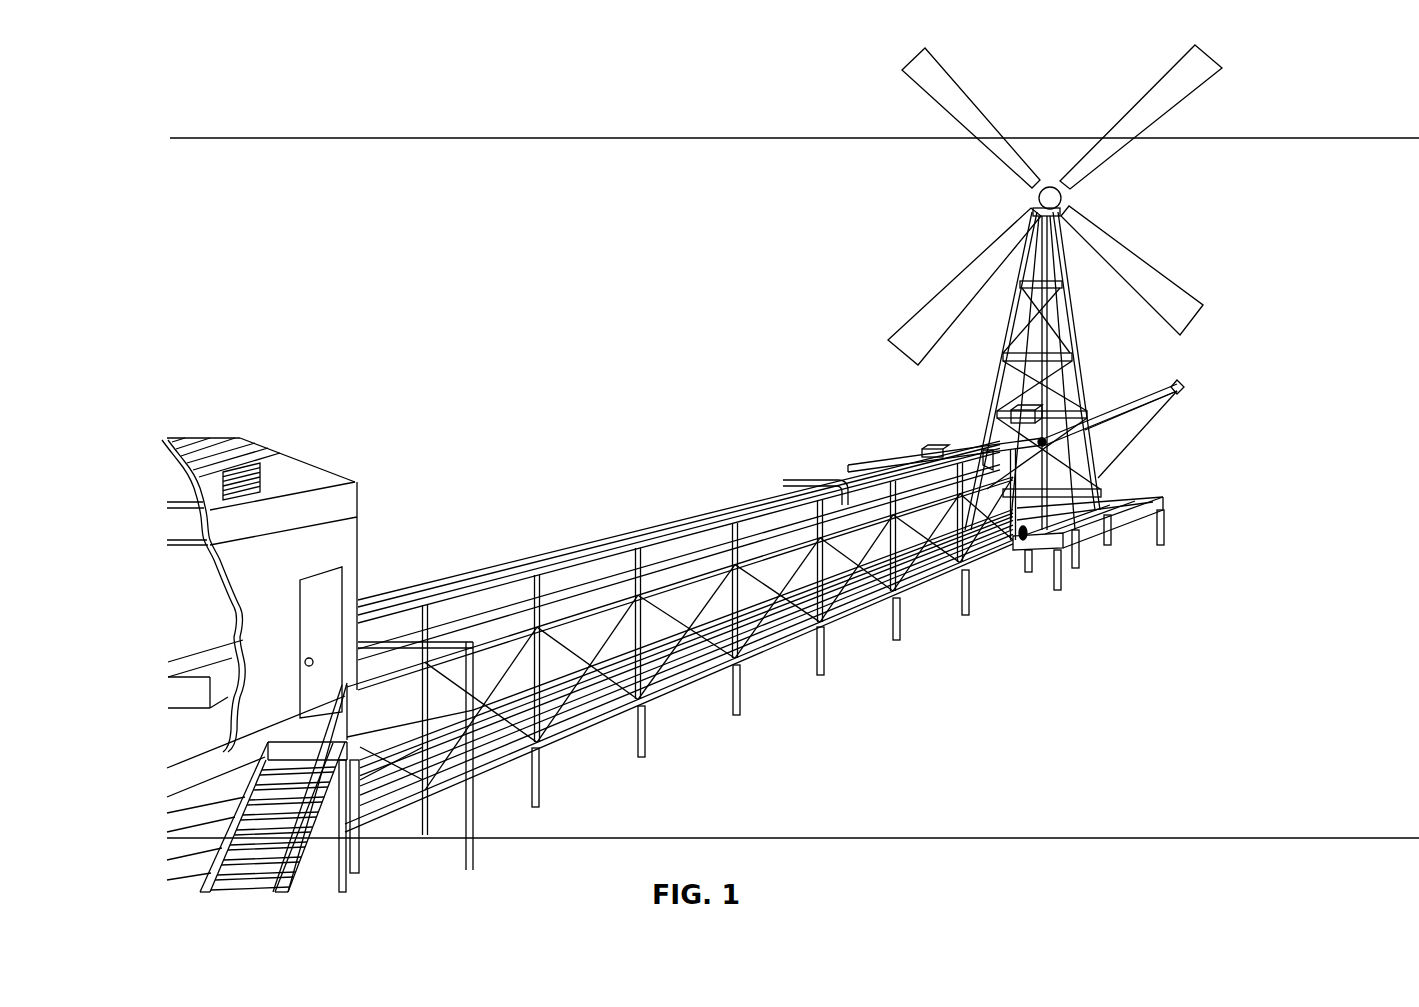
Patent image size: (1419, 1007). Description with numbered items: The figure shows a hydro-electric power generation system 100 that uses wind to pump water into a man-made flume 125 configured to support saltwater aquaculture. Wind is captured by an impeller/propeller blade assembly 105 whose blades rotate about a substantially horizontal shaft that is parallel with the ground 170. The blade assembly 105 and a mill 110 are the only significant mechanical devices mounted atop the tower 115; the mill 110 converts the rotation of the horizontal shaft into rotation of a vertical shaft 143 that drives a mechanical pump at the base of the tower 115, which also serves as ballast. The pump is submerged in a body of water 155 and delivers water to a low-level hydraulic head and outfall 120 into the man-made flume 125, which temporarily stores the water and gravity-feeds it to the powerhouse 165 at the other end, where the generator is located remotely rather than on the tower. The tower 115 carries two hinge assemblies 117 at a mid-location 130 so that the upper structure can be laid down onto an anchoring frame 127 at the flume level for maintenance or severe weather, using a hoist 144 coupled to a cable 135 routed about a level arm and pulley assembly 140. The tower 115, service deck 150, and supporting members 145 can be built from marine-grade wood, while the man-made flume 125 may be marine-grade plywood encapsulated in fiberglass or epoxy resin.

The hydro-electric power generation system 100 is at (432, 340).
The impeller/propeller blade assembly 105 is at (905, 60).
The mill 110 is at (1035, 200).
The tower 115 is at (1008, 333).
The hinge assemblies 117 is at (990, 412).
The low-level hydraulic head and outfall 120 is at (925, 447).
The man-made flume 125 is at (603, 532).
The anchoring frame 127 is at (818, 487).
The mid-location 130 is at (1083, 403).
The cable 135 is at (1182, 372).
The level arm and pulley assembly 140 is at (1186, 386).
The vertical shaft 143 is at (1033, 565).
The hoist 144 is at (1020, 543).
The supporting members 145 is at (837, 605).
The service deck 150 is at (790, 650).
The body of water 155 is at (1195, 605).
The powerhouse 165 is at (313, 455).
The ground 170 is at (937, 862).